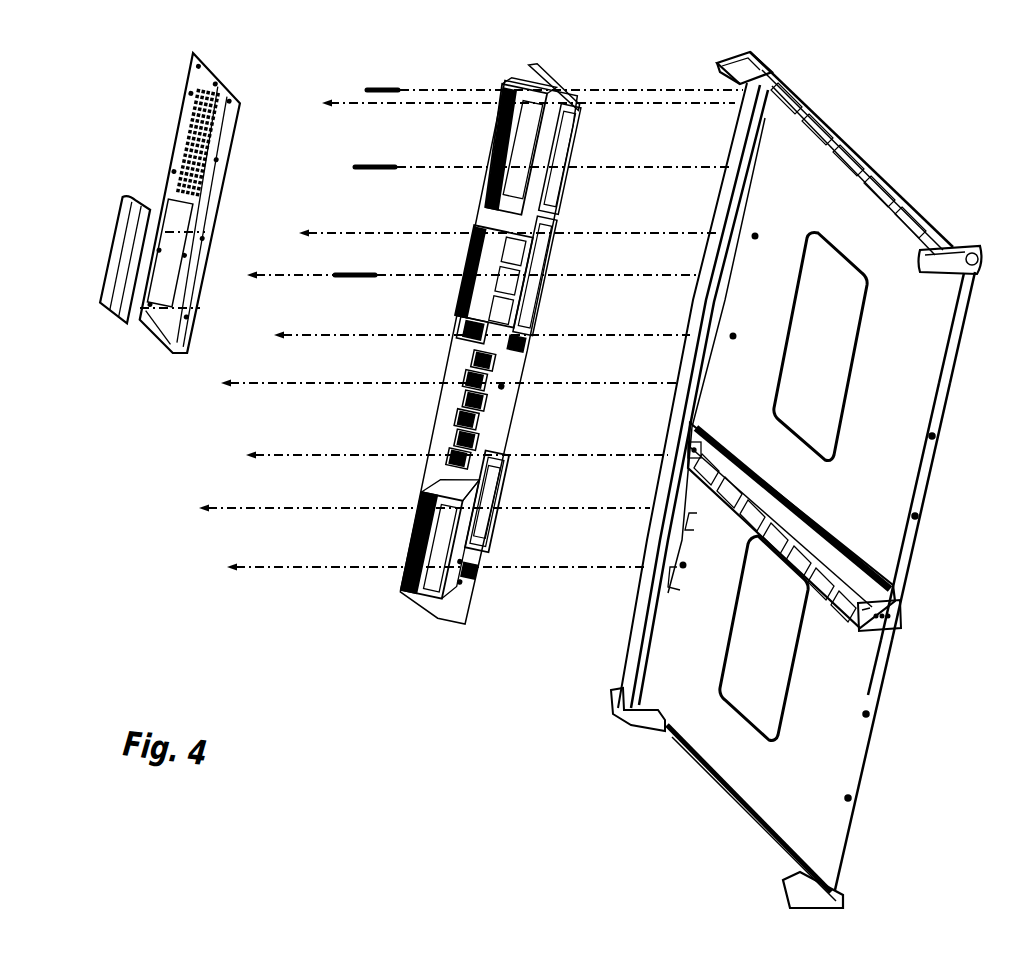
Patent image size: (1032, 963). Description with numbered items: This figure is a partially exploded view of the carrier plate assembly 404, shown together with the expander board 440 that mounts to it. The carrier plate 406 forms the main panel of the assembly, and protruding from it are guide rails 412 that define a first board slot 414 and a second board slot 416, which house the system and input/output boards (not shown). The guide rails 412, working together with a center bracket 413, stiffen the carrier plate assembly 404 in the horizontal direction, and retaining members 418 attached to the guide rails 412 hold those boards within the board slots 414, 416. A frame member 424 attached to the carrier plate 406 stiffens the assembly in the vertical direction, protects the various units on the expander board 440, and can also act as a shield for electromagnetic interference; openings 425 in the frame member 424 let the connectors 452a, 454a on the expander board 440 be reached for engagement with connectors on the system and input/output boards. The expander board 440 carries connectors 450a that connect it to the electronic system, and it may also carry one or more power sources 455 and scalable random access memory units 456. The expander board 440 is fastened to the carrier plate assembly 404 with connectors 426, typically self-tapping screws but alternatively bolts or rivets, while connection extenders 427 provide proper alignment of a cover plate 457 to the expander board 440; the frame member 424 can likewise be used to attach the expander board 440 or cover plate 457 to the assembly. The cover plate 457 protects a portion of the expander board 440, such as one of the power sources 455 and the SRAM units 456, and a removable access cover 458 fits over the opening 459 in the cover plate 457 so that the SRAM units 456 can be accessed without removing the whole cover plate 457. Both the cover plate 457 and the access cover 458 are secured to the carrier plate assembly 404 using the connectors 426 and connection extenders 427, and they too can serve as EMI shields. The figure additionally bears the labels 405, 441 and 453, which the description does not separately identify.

The carrier plate assembly 404 is at (873, 207).
The cutout opening in chassis panel 405 is at (845, 353).
The carrier plate 406 is at (943, 320).
The guide rails 412 is at (893, 590).
The center bracket 413 is at (850, 632).
The first board slot 414 is at (930, 403).
The second board slot 416 is at (840, 760).
The retaining members 418 is at (963, 250).
The frame member 424 is at (650, 663).
The openings 425 is at (785, 123).
The connectors 426 is at (228, 570).
The connection extenders 427 is at (381, 87).
The expander board 440 is at (431, 620).
The components (1-6) 441 is at (450, 413).
The connectors 450a is at (457, 357).
The connector 452a is at (567, 187).
The mounting element 453 is at (530, 347).
The connector 454a is at (490, 530).
The power sources 455 is at (500, 143).
The scalable random access memory (SRAM) 456 is at (493, 257).
The cover plate 457 is at (207, 76).
The removable access cover 458 is at (103, 306).
The opening 459 is at (192, 220).